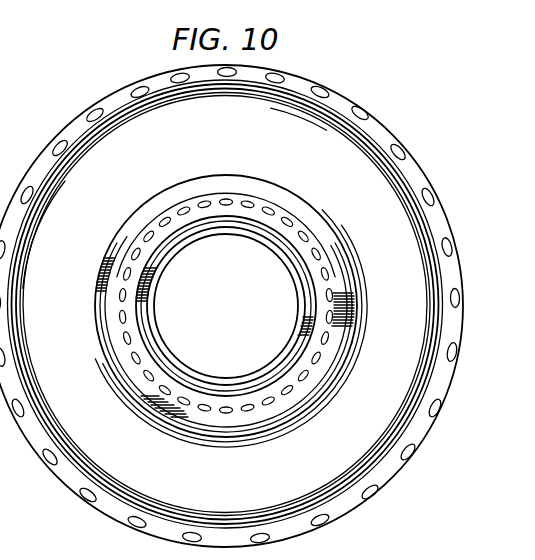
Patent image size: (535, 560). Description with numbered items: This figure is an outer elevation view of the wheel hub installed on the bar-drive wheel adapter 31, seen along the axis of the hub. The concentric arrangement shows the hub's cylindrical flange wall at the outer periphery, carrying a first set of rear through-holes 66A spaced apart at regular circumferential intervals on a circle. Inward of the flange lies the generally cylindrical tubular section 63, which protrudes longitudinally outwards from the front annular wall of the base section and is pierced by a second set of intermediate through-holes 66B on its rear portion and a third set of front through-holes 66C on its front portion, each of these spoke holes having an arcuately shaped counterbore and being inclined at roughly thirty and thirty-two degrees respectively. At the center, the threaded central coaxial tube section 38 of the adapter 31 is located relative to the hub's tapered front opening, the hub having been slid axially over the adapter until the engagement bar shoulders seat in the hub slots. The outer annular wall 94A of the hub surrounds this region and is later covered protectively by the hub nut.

The rear through-holes 66A is at (322, 90).
The adapter 31 is at (186, 228).
The central coaxial tube section 38 is at (138, 275).
The intermediate through-holes 66B is at (276, 217).
The front through-holes 66C is at (228, 216).
The outer annular wall 94A is at (337, 365).
The tubular section 63 is at (297, 417).